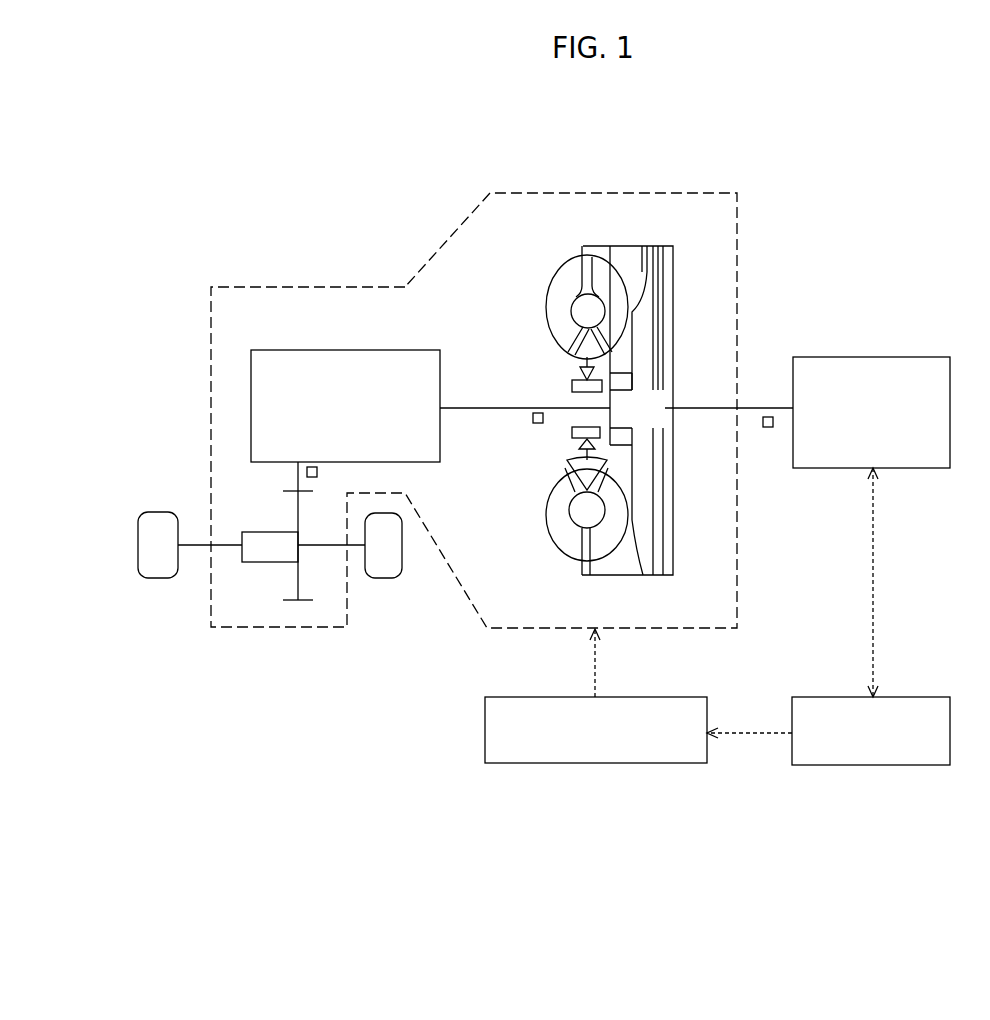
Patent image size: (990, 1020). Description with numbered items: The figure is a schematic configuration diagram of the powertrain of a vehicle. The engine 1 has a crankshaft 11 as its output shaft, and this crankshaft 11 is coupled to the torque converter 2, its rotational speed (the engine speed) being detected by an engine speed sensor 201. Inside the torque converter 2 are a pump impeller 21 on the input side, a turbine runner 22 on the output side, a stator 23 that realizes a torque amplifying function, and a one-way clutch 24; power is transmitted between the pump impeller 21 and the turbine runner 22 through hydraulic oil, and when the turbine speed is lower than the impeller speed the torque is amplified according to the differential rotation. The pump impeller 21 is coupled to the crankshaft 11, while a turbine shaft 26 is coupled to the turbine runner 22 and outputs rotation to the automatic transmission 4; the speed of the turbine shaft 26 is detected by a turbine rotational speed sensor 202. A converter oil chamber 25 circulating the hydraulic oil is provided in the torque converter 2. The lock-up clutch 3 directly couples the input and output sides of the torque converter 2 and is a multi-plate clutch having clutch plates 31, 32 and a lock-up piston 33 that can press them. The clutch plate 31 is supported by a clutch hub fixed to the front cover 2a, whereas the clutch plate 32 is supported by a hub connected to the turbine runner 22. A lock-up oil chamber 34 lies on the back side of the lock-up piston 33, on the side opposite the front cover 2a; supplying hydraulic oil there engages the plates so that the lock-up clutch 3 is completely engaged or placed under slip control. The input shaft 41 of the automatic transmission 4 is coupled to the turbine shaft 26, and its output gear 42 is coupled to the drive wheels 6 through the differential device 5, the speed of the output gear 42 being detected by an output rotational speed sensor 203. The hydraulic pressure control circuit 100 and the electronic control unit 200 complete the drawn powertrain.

The engine 1 is at (843, 357).
The torque converter 2 is at (563, 387).
The front cover 2a is at (675, 440).
The lock-up clutch 3 is at (674, 384).
The automatic transmission 4 is at (370, 350).
The differential device 5 is at (263, 568).
The drive wheels 6 is at (157, 578).
The crankshaft 11 is at (768, 408).
The pump impeller 21 is at (552, 282).
The turbine runner 22 is at (600, 252).
The stator 23 is at (548, 352).
The one-way clutch 24 is at (572, 386).
The converter oil chamber 25 is at (654, 236).
The turbine shaft 26 is at (565, 425).
The clutch plate 31 is at (670, 258).
The clutch plate 32 is at (665, 290).
The lock-up piston 33 is at (668, 322).
The lock-up oil chamber 34 is at (627, 390).
The input shaft 41 is at (494, 400).
The output gear 42 is at (290, 478).
The hydraulic pressure control circuit 100 is at (540, 695).
The electronic control unit 200 is at (833, 695).
The engine speed sensor 201 is at (768, 428).
The turbine rotational speed sensor 202 is at (533, 420).
The output rotational speed sensor 203 is at (318, 473).